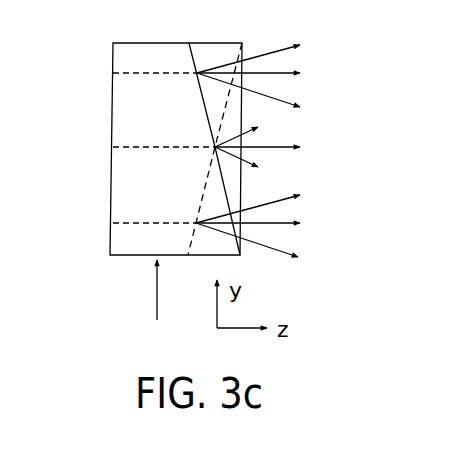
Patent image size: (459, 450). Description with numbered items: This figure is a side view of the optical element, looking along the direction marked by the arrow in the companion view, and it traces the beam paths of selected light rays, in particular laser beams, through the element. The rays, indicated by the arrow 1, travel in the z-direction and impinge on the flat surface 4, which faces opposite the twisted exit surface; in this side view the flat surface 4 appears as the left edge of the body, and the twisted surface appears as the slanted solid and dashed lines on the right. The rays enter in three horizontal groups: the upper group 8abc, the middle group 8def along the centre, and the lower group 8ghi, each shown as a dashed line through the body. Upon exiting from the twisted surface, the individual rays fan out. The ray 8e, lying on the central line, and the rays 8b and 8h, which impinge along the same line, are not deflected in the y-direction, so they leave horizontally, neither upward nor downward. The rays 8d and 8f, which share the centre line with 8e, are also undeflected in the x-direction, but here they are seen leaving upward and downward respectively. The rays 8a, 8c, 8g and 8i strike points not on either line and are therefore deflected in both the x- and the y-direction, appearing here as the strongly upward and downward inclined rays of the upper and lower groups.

The flat surface 4 is at (113, 113).
The incident light beam 1 is at (156, 306).
The light rays 8a, 8b, 8c 8abc is at (113, 73).
The light rays 8d, 8e, 8f 8def is at (113, 147).
The light rays 8g, 8h, 8i 8ghi is at (113, 223).
The light ray 8a is at (264, 49).
The light ray 8b is at (264, 75).
The light ray 8c is at (267, 98).
The light ray 8d is at (251, 131).
The light ray 8e is at (273, 149).
The light ray 8f is at (251, 165).
The light ray 8g is at (266, 202).
The light ray 8h is at (266, 226).
The light ray 8i is at (259, 252).